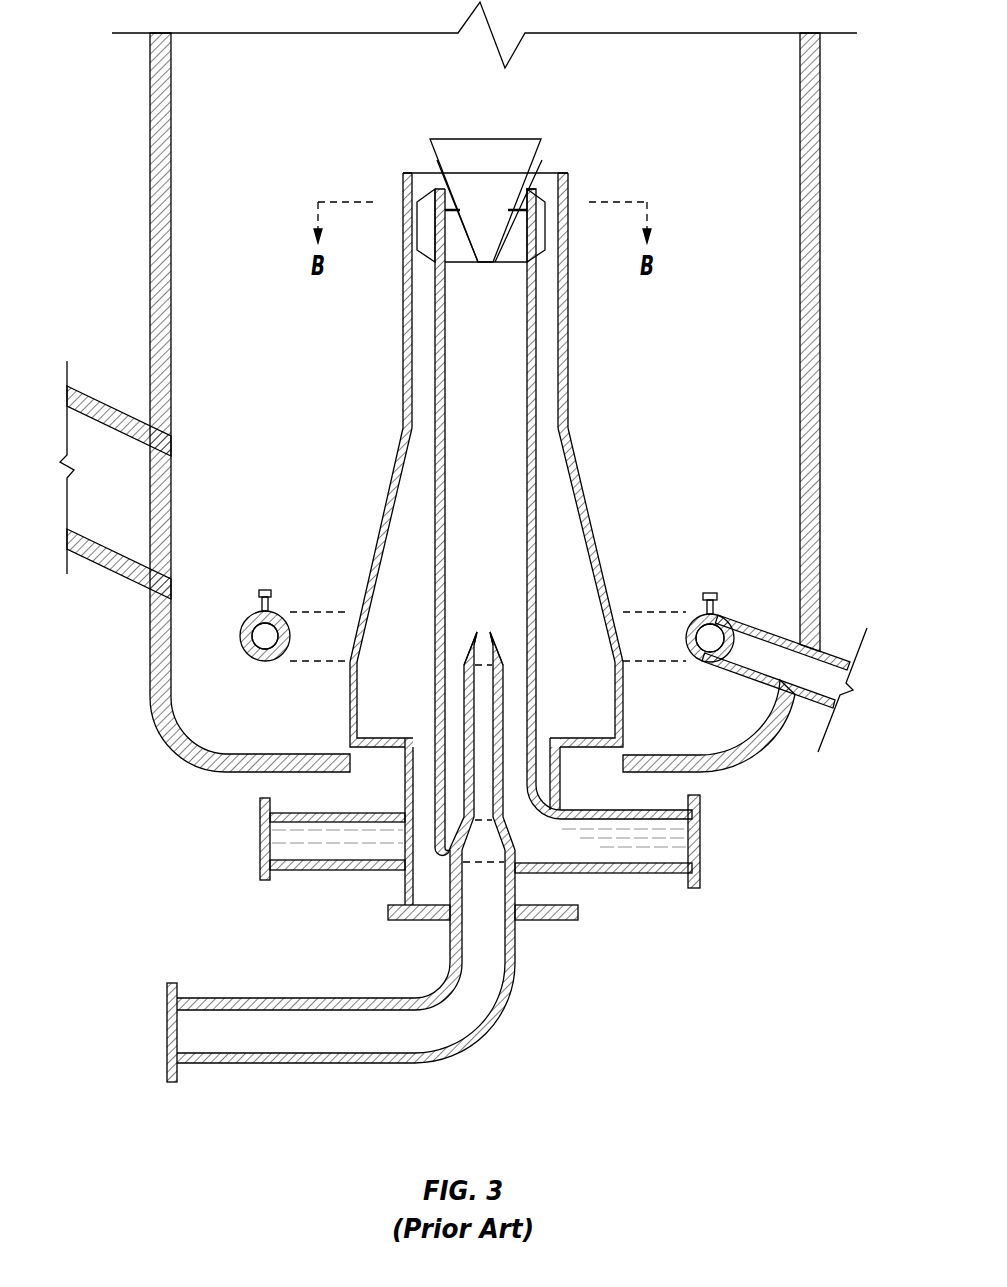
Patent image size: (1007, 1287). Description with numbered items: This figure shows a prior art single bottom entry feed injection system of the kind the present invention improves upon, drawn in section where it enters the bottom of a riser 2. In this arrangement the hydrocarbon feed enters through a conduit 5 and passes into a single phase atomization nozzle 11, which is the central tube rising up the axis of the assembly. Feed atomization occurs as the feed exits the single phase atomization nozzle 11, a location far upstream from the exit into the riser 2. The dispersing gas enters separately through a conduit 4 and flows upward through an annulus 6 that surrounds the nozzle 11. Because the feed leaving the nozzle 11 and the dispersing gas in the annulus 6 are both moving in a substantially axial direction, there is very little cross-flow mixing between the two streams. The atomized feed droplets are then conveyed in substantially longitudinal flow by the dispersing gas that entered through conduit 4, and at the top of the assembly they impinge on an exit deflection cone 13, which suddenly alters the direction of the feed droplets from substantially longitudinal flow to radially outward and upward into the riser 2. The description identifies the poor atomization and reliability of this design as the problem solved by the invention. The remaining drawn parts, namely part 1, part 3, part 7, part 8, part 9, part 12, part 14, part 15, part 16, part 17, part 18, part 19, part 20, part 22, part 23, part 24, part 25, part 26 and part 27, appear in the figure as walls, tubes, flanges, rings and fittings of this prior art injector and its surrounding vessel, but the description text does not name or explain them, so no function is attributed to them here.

The inner tube 1 is at (609, 504).
The riser 2 is at (455, 402).
The tube bottom bend 3 is at (403, 877).
The conduit 4 is at (607, 857).
The conduit 5 is at (369, 965).
The annulus 6 is at (488, 518).
The vessel bottom 7 is at (709, 749).
The seal ring 8 is at (505, 246).
The nozzle wall 9 is at (514, 747).
The single phase atomization nozzle 11 is at (449, 601).
The cone surface 12 is at (453, 156).
The exit deflection cone 13 is at (484, 177).
The gap 14 is at (478, 159).
The conical section of outer tube 15 is at (501, 545).
The outer tube 16 is at (519, 300).
The outer tube upper edge 17 is at (484, 161).
The retaining ring 18 is at (492, 255).
The vessel interior 19 is at (471, 93).
The feed pipe 20 is at (103, 485).
The outlet pipe 22 is at (807, 678).
The ring nozzle 23 is at (467, 661).
The connection fitting 24 is at (489, 582).
The annular chamber 25 is at (468, 637).
The annular gap 26 is at (477, 829).
The drain pipe 27 is at (331, 859).